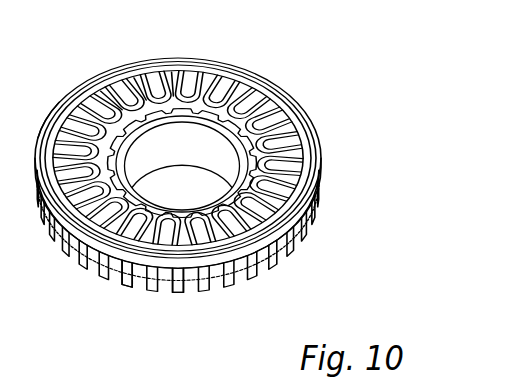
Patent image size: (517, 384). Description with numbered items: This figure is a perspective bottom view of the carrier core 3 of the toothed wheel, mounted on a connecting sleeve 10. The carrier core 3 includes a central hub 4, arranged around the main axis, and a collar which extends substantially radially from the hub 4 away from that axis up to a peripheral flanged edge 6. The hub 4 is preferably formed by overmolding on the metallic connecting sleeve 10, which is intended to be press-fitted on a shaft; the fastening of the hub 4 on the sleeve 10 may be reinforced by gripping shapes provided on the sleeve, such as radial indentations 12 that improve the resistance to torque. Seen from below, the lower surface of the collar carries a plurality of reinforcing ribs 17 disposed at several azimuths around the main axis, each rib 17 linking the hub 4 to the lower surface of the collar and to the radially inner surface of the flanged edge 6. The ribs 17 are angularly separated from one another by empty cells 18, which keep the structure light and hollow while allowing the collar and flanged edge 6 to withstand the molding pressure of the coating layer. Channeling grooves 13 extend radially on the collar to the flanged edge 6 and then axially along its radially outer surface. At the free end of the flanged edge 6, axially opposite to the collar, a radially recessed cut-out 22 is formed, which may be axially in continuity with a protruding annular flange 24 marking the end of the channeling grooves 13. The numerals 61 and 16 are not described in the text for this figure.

The carrier core 3 is at (332, 116).
The peripheral flanged edge 6 is at (330, 142).
The radially recessed cut-out 22 is at (328, 186).
The rim edge 61 is at (93, 86).
The protruding annular flange 24 is at (325, 218).
The teeth 16 is at (246, 291).
The channeling grooves 13 is at (170, 299).
The empty cells 18 is at (110, 96).
The reinforcing ribs 17 is at (97, 80).
The connecting sleeve 10 is at (130, 132).
The hub 4 is at (243, 132).
The radial indentations 12 is at (137, 181).